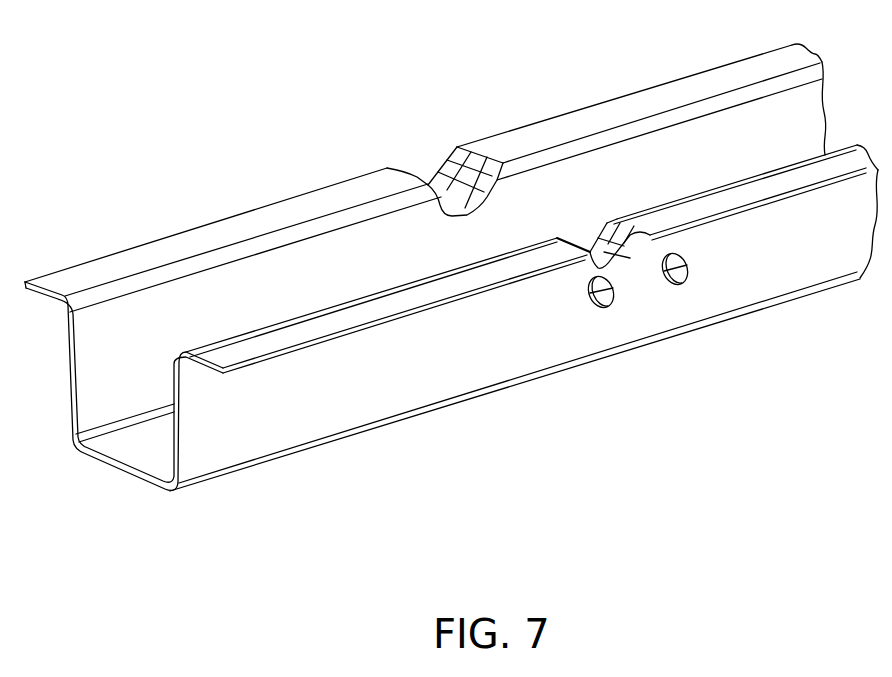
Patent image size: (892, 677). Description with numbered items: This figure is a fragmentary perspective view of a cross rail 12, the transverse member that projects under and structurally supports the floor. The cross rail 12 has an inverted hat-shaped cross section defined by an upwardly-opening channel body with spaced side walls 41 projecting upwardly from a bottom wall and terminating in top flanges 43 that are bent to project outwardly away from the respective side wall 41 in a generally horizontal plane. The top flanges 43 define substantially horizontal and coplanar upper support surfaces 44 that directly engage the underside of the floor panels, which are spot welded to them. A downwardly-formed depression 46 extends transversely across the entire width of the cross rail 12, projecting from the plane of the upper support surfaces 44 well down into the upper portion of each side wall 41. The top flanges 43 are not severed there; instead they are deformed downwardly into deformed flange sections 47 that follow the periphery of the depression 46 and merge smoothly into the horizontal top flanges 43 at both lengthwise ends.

The cross rail 12 is at (451, 302).
The side wall 41 is at (150, 382).
The top flange 43 is at (192, 227).
The upper support surface 44 is at (305, 198).
The depression 46 is at (423, 175).
The deformed flange section 47 is at (460, 170).